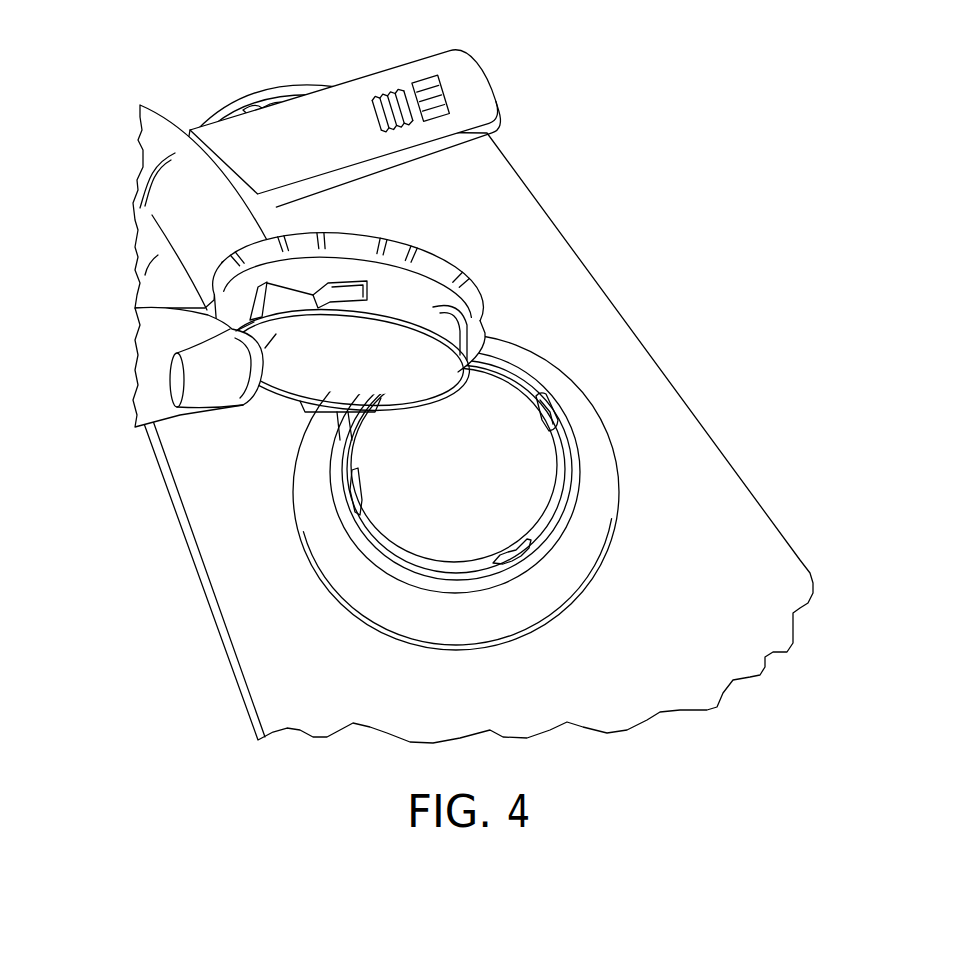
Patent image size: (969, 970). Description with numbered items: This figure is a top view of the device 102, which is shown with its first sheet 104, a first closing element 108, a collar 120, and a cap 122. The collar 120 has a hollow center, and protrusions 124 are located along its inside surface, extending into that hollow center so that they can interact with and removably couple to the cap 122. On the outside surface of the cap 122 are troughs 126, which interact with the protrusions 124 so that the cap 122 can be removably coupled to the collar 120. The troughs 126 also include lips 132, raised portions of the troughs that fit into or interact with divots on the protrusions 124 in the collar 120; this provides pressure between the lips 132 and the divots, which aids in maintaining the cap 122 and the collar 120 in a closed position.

The device 102 is at (178, 605).
The first sheet 104 is at (273, 687).
The first closing element 108 is at (350, 103).
The collar 120 is at (597, 532).
The cap 122 is at (472, 277).
The protrusions 124 is at (362, 495).
The troughs 126 is at (287, 300).
The lips 132 is at (330, 285).